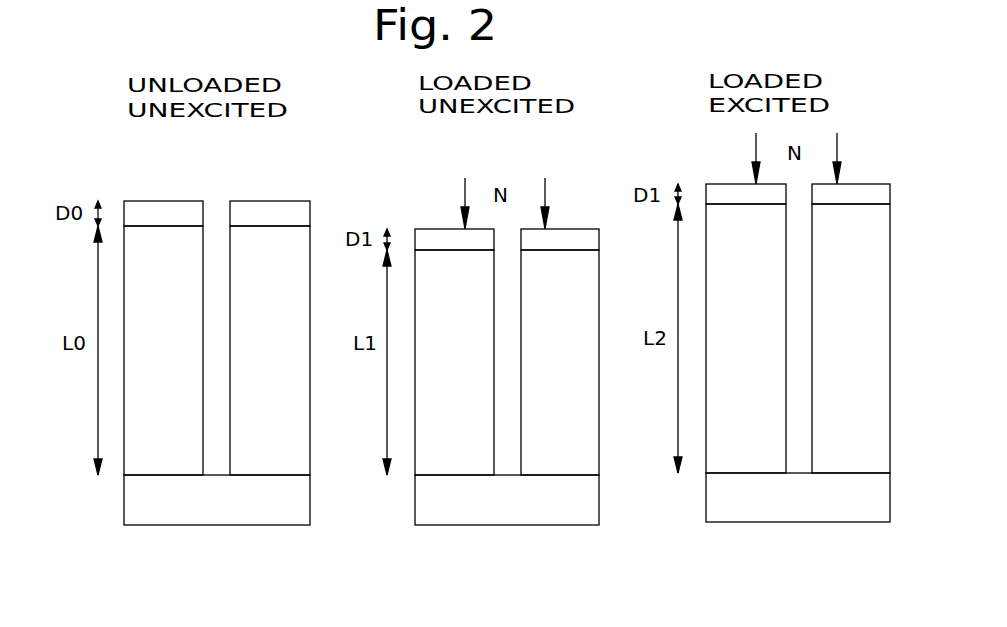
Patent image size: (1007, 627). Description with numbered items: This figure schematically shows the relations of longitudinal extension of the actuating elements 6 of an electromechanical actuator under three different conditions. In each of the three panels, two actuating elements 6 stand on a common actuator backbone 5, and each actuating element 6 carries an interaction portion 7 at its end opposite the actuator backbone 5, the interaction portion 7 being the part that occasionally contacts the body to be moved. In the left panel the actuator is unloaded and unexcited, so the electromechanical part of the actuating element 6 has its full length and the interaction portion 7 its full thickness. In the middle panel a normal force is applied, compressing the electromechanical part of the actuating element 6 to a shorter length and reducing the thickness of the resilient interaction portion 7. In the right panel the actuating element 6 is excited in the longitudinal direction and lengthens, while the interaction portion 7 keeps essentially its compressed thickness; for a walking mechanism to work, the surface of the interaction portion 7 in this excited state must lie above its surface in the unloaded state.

The actuator backbone 5 is at (267, 517).
The actuating element 6 is at (140, 455).
The interaction portion 7 is at (165, 215).